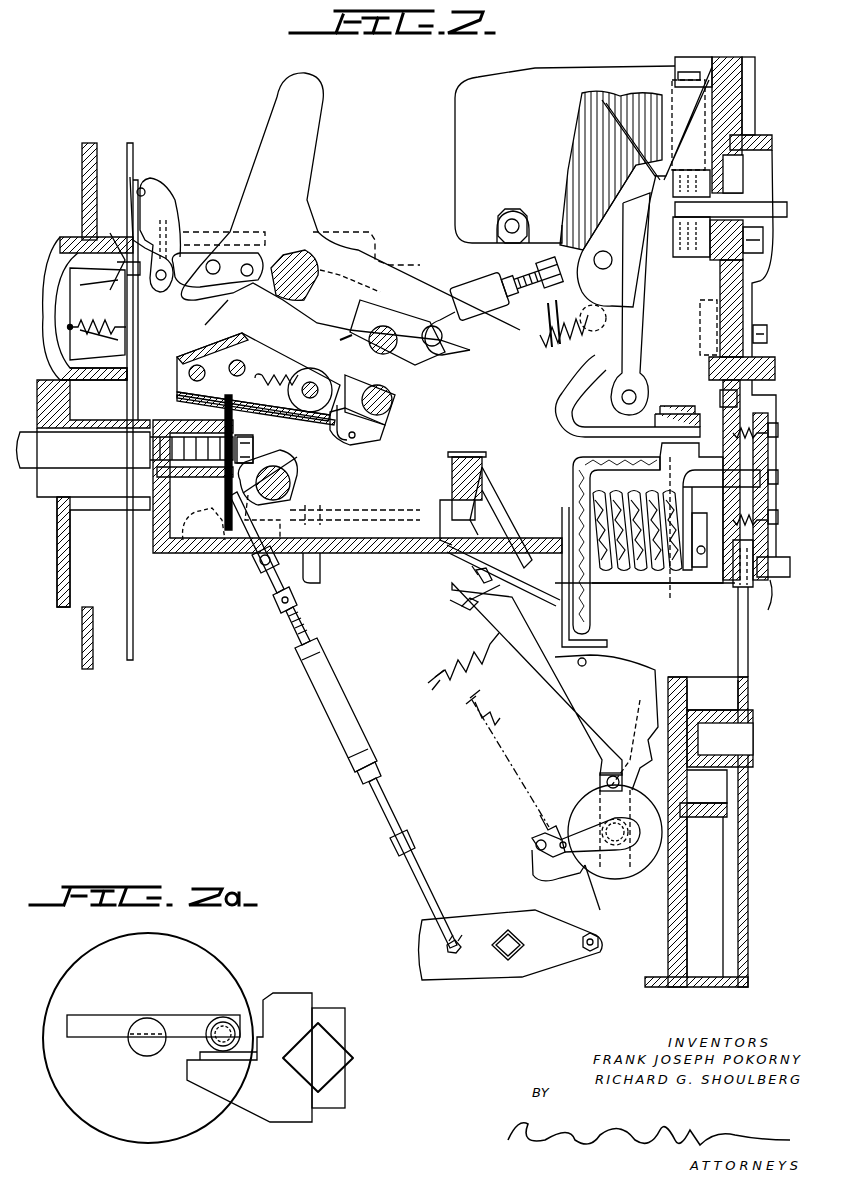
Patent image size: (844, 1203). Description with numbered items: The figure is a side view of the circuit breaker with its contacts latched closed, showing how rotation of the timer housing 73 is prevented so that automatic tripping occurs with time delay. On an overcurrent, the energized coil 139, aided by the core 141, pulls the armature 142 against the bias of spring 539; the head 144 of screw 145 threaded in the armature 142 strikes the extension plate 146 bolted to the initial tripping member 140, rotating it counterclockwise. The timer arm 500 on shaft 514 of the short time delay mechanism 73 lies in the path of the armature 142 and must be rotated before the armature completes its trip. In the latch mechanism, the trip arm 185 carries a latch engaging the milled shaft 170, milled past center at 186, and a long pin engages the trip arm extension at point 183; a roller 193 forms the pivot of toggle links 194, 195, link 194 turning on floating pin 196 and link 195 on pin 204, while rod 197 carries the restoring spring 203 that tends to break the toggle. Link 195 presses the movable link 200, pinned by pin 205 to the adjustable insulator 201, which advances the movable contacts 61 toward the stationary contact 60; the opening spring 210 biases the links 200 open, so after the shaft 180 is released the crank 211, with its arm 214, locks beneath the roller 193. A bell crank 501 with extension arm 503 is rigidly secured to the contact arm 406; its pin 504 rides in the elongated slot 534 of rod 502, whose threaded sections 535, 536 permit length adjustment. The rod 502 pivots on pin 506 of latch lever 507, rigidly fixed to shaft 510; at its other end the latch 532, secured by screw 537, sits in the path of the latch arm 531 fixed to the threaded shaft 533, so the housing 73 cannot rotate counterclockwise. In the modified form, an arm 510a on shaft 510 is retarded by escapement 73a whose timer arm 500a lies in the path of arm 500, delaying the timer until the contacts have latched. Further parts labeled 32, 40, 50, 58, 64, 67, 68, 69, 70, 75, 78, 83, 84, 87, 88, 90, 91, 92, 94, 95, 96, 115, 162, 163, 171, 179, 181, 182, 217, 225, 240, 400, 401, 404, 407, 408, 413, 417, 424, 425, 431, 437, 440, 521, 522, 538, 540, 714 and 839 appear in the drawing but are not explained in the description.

In FIG. 2, the cover 32 is at (458, 152).
In FIG. 2, the housing 40 is at (757, 102).
In FIG. 2, the heater housing 50 is at (680, 585).
In FIG. 2, the terminal screw 58 is at (769, 336).
In FIG. 2, the stationary contact 60 is at (655, 185).
In FIG. 2, the movable contact assembly 61 is at (654, 174).
In FIG. 2, the spring arm 64 is at (690, 98).
In FIG. 2, the pivot pin 67 is at (612, 268).
In FIG. 2, the pin 68 is at (780, 205).
In FIG. 2, the bolt 69 is at (670, 105).
In FIG. 2, the screw 70 is at (765, 243).
In FIG. 2, the timer housing 73 is at (572, 804).
In FIG. 2, the lead wire 75 is at (780, 599).
In FIG. 2, the lever 78 is at (627, 226).
In FIG. 2, the spring 83 is at (548, 348).
In FIG. 2, the lever arm 84 is at (626, 315).
In FIG. 2, the pivot 87 is at (614, 262).
In FIG. 2, the pivot pin 88 is at (635, 388).
In FIG. 2, the spring seat 90 is at (545, 340).
In FIG. 2, the spring end 91 is at (570, 345).
In FIG. 2, the bracket bend 92 is at (562, 425).
In FIG. 2, the bracket 94 is at (620, 398).
In FIG. 2, the bracket base 95 is at (672, 410).
In FIG. 2, the terminal 96 is at (740, 403).
In FIG. 2, the cover 115 is at (456, 117).
In FIG. 2, the coil 139 is at (657, 538).
In FIG. 2, the initial tripping member 140 is at (452, 483).
In FIG. 2, the core 141 is at (571, 574).
In FIG. 2, the armature 142 is at (500, 606).
In FIG. 2, the head 144 is at (470, 570).
In FIG. 2, the screw 145 is at (452, 600).
In FIG. 2, the extension plate 146 is at (503, 497).
In FIG. 2, the rod 162 is at (395, 511).
In FIG. 2, the bracket foot 163 is at (430, 512).
In FIG. 2, the milled shaft 170 is at (300, 488).
In FIG. 2, the rod 171 is at (355, 514).
In FIG. 2, the nut 179 is at (250, 462).
In FIG. 2, the shaft 180 is at (33, 495).
In FIG. 2, the cam 181 is at (220, 555).
In FIG. 2, the link 182 is at (267, 465).
In FIG. 2, the point 183 is at (193, 365).
In FIG. 2, the trip arm 185 is at (244, 362).
In FIG. 2, the milled portion 186 is at (294, 478).
In FIG. 2, the roller 193 is at (314, 368).
In FIG. 2, the link 194 is at (258, 377).
In FIG. 2, the link 195 is at (395, 364).
In FIG. 2, the floating pin 196 is at (280, 370).
In FIG. 2, the rod 197 is at (242, 382).
In FIG. 2, the movable link 200 is at (372, 325).
In FIG. 2, the adjustable insulator 201 is at (455, 306).
In FIG. 2, the restoring spring 203 is at (256, 411).
In FIG. 2, the pin 204 is at (398, 328).
In FIG. 2, the pin 205 is at (438, 350).
In FIG. 2, the opening spring 210 is at (355, 329).
In FIG. 2, the crank 211 is at (380, 475).
In FIG. 2, the arm 214 is at (388, 428).
In FIG. 2, the pin 217 is at (365, 442).
In FIG. 2, the roller 225 is at (396, 398).
In FIG. 2, the base 240 is at (322, 567).
In FIG. 2, the housing 400 is at (122, 335).
In FIG. 2, the arm 401 is at (278, 245).
In FIG. 2, the link 404 is at (217, 263).
In FIG. 2, the contact arm 406 is at (343, 280).
In FIG. 2, the hub 407 is at (320, 262).
In FIG. 2, the slot 408 is at (346, 232).
In FIG. 2, the lever 413 is at (152, 180).
In FIG. 2, the pin 417 is at (209, 318).
In FIG. 2, the flange 424 is at (52, 520).
In FIG. 2, the wall 425 is at (60, 560).
In FIG. 2, the plate 431 is at (100, 235).
In FIG. 2, the plate end 437 is at (95, 650).
In FIG. 2, the bar 440 is at (80, 640).
In FIG. 2, the timer arm 500 is at (600, 775).
In FIG. 2, the bell crank 501 is at (314, 180).
In FIG. 2, the rod 502 is at (268, 608).
In FIG. 2, the extension arm 503 is at (203, 232).
In FIG. 2, the pin 504 is at (118, 270).
In FIG. 2, the pin 506 is at (440, 957).
In FIG. 2, the latch lever 507 is at (432, 978).
In FIG. 2, the shaft 510 is at (518, 958).
In FIG. 2A, the shaft 510 is at (340, 1082).
In FIG. 2, the shaft 514 is at (620, 845).
In FIG. 2, the pivot 521 is at (590, 658).
In FIG. 2, the link 522 is at (620, 765).
In FIG. 2, the latch arm 531 is at (580, 915).
In FIG. 2, the latch 532 is at (605, 935).
In FIG. 2, the threaded shaft 533 is at (622, 795).
In FIG. 2, the elongated slot 534 is at (118, 265).
In FIG. 2, the threaded member section 535 is at (290, 630).
In FIG. 2, the threaded member section 536 is at (375, 805).
In FIG. 2, the screw 537 is at (600, 942).
In FIG. 2, the link 538 is at (512, 780).
In FIG. 2, the spring 539 is at (465, 648).
In FIG. 2, the lever 540 is at (530, 841).
In FIG. 2, the spring 714 is at (97, 321).
In FIG. 2, the pivot 839 is at (599, 305).
In FIG. 2A, the escapement means 73a is at (86, 1130).
In FIG. 2A, the timer arm 500a is at (185, 1020).
In FIG. 2A, the arm 510a is at (275, 1115).